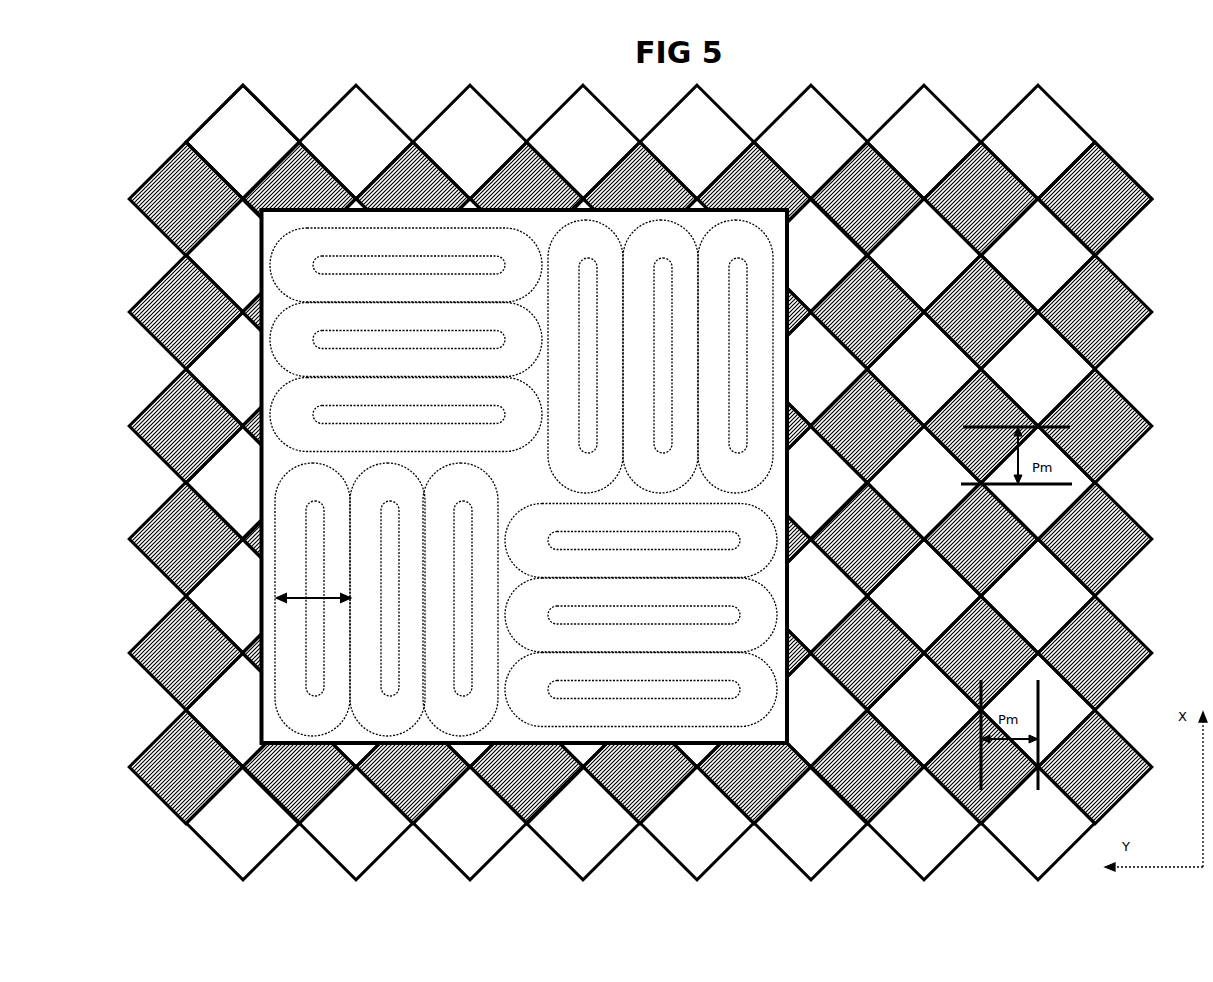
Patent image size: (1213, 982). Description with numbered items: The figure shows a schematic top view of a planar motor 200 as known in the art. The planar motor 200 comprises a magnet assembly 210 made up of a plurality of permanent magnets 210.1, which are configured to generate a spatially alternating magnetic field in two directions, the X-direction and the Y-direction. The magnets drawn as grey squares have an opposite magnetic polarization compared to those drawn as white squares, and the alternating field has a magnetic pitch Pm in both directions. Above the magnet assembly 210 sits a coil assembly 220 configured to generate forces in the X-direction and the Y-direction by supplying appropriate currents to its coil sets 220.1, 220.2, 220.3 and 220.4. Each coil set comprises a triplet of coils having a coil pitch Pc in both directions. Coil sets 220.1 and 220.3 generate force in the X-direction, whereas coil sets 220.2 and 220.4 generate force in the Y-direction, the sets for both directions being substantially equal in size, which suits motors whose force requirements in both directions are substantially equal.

The planar motor 200 is at (1153, 116).
The magnet assembly 210 is at (185, 129).
The permanent magnets 210.1 is at (1043, 262).
The coil assembly 220 is at (333, 168).
The coil set 220.1 is at (307, 300).
The coil set 220.2 is at (755, 387).
The coil set 220.3 is at (755, 610).
The coil set 220.4 is at (293, 712).